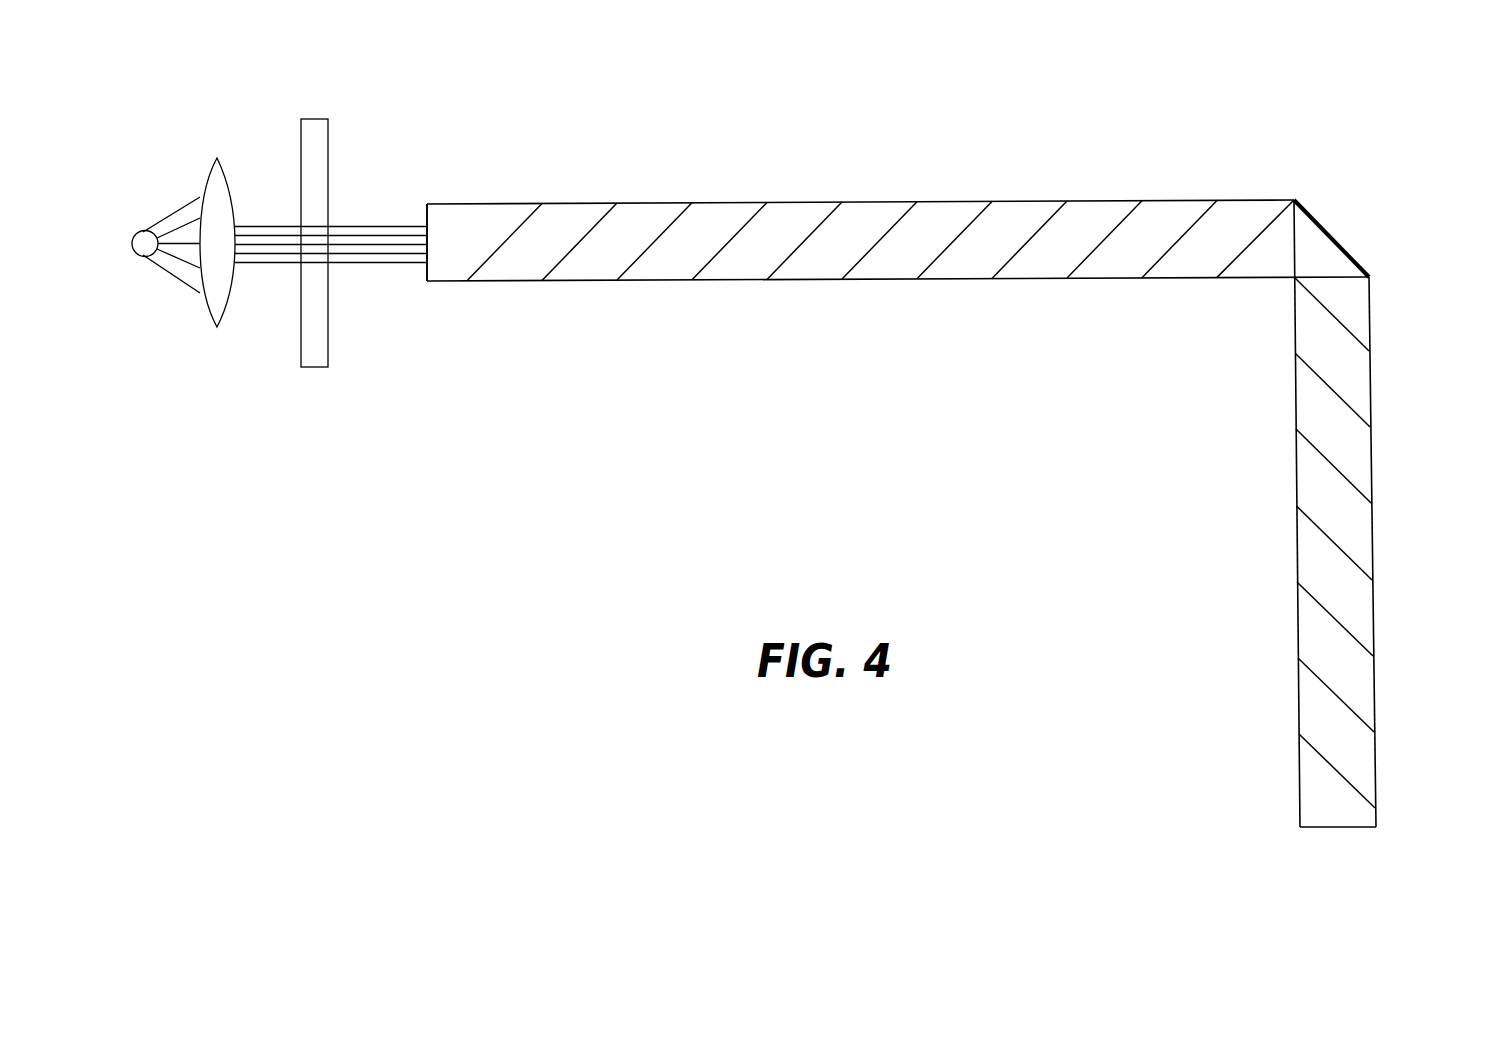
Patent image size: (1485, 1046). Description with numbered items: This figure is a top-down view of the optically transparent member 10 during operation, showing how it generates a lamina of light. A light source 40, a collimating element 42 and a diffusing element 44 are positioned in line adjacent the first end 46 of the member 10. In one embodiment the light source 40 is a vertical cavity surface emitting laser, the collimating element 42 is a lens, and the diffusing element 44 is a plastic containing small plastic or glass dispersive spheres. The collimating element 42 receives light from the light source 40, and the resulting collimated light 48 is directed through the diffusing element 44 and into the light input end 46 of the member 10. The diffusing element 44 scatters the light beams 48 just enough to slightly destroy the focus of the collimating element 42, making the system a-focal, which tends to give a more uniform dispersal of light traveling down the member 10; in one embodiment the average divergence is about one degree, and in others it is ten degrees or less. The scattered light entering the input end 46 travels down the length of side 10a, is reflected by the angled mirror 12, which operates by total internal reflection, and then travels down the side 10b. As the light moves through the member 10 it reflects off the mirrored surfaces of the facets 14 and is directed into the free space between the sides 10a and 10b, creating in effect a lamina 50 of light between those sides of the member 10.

The optically transparent member 10 is at (1180, 151).
The side 10a is at (880, 204).
The side 10b is at (1377, 618).
The angled mirror 12 is at (1333, 234).
The facets 14 is at (895, 262).
The light source 40 is at (142, 256).
The collimating element 42 is at (222, 322).
The diffusing element 44 is at (313, 367).
The light input end 46 is at (425, 273).
The collimated light 48 is at (373, 226).
The lamina of light 50 is at (898, 555).